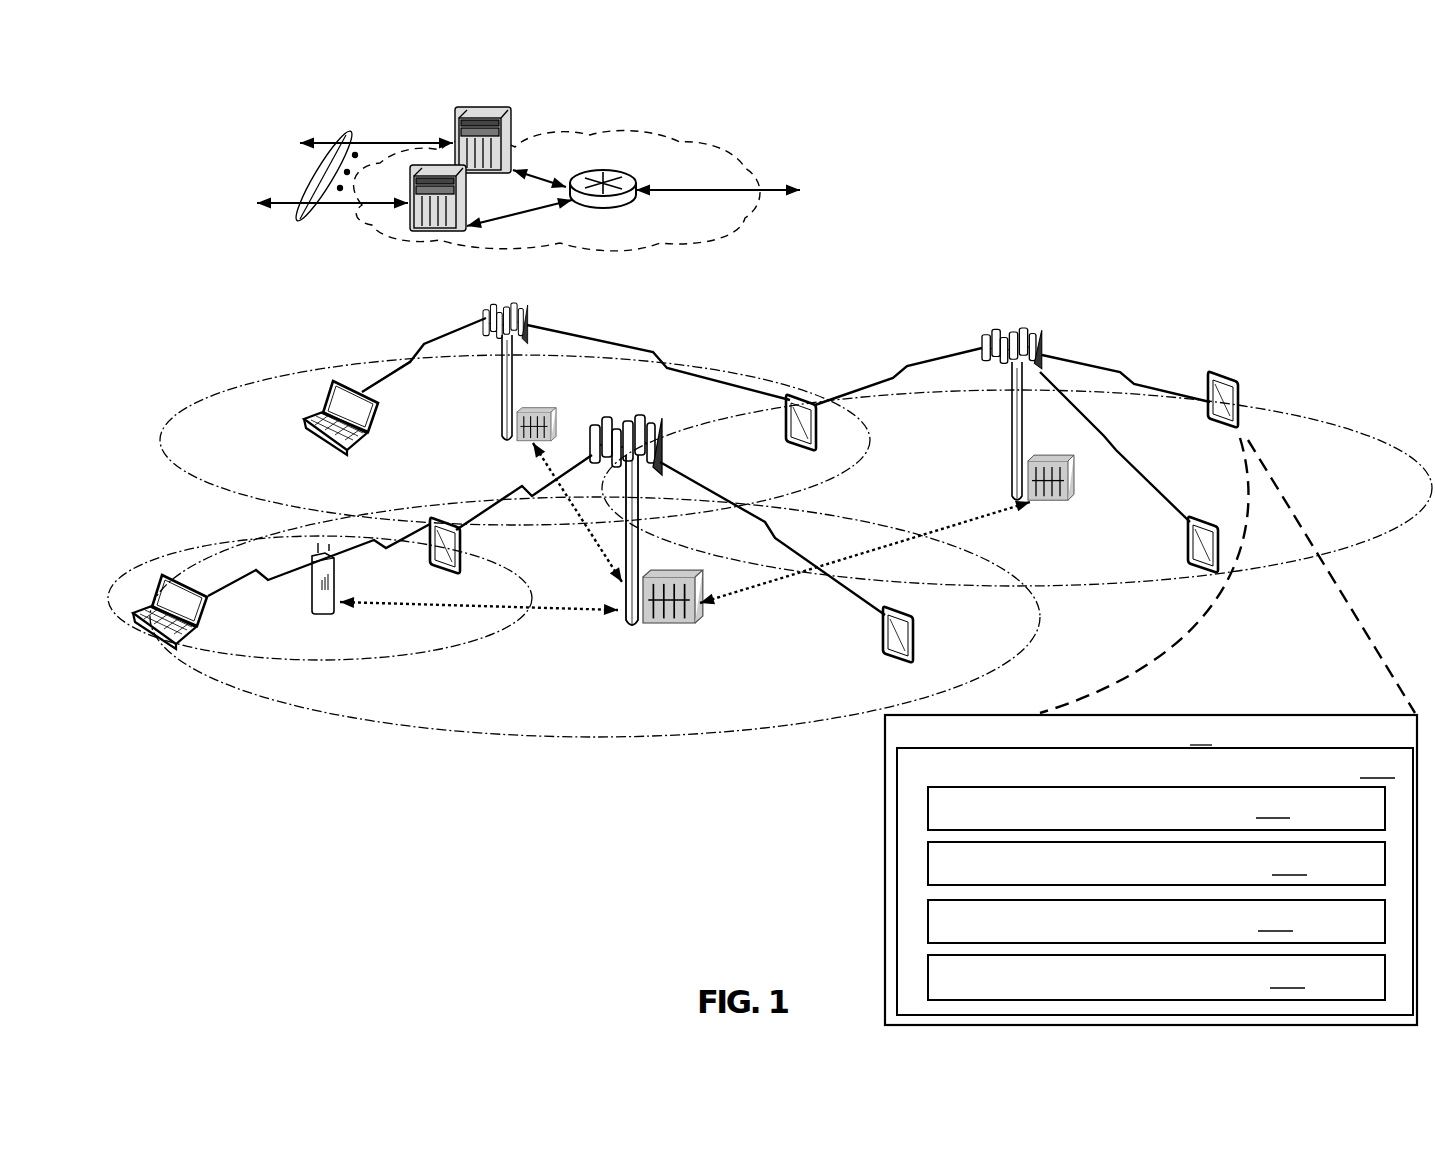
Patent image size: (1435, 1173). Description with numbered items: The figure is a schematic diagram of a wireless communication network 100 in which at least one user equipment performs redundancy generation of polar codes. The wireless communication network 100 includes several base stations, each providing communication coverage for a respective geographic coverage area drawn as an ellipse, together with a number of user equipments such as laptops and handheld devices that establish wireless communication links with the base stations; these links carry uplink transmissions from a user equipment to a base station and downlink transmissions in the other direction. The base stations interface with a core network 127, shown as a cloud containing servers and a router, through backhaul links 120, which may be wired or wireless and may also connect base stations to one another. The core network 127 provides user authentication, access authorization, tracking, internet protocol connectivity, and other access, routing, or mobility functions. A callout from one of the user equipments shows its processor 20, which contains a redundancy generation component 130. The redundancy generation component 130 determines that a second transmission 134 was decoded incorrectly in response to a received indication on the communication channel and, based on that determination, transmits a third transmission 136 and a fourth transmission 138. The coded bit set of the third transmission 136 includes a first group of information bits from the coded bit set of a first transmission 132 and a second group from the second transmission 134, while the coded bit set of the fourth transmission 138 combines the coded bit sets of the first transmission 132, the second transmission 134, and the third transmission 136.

The wireless communication network 100 is at (170, 146).
The backhaul link 120 is at (312, 214).
The core network 127 is at (640, 247).
The processor 20 is at (1151, 870).
The redundancy generation component 130 is at (1155, 881).
The first transmission 132 is at (1156, 808).
The second transmission 134 is at (1156, 863).
The third transmission 136 is at (1156, 921).
The fourth transmission 138 is at (1156, 977).